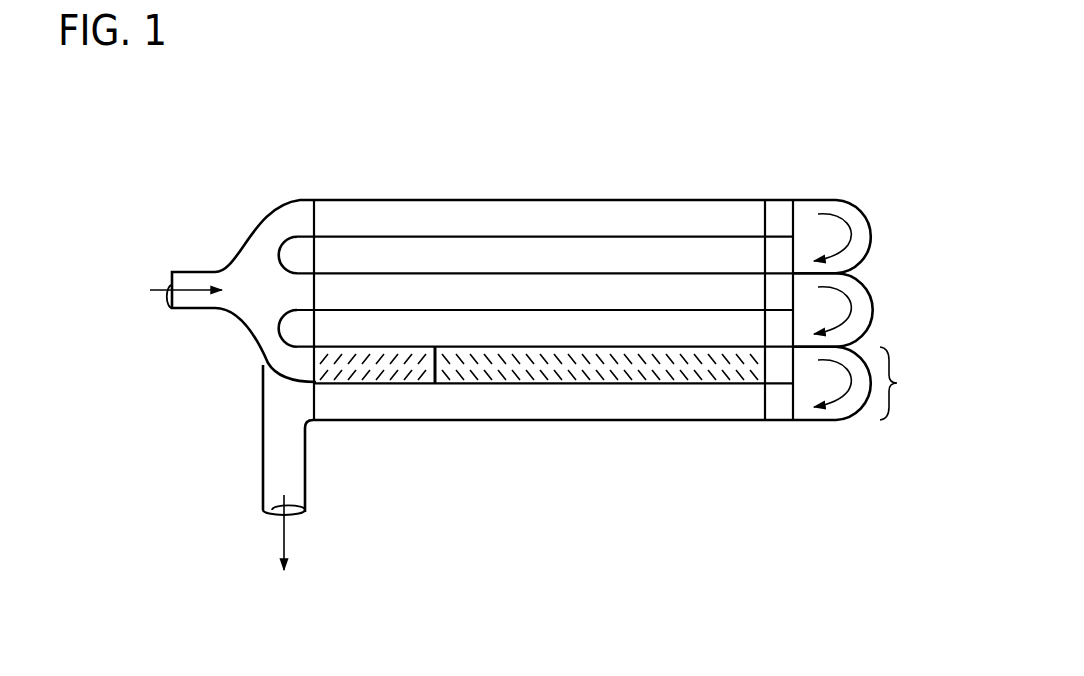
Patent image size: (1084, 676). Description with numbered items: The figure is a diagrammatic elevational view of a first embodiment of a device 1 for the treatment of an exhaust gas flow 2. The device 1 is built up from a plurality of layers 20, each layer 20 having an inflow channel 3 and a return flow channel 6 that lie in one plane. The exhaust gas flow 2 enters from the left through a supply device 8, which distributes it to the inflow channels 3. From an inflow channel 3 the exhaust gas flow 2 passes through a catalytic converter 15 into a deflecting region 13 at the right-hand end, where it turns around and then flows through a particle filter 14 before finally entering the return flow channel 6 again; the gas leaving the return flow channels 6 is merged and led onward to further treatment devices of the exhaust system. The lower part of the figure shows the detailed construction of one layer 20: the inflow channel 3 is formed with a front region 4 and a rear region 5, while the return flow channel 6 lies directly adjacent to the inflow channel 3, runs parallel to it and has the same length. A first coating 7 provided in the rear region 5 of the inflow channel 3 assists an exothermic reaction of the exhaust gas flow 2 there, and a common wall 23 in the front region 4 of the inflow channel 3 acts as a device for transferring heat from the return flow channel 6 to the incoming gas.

The device 1 is at (740, 492).
The exhaust gas flow 2 is at (233, 302).
The inflow channel 3 is at (480, 390).
The front region 4 is at (371, 368).
The rear region 5 is at (705, 386).
The return flow channel 6 is at (551, 408).
The first coating 7 is at (648, 388).
The supply device 8 is at (262, 210).
The deflecting region 13 is at (852, 412).
The particle filter 14 is at (783, 250).
The catalytic converter 15 is at (780, 216).
The layer 20 is at (917, 383).
The common wall 23 is at (407, 385).